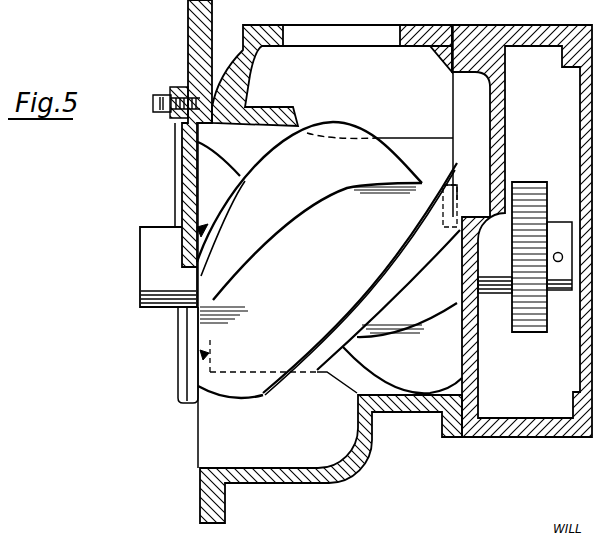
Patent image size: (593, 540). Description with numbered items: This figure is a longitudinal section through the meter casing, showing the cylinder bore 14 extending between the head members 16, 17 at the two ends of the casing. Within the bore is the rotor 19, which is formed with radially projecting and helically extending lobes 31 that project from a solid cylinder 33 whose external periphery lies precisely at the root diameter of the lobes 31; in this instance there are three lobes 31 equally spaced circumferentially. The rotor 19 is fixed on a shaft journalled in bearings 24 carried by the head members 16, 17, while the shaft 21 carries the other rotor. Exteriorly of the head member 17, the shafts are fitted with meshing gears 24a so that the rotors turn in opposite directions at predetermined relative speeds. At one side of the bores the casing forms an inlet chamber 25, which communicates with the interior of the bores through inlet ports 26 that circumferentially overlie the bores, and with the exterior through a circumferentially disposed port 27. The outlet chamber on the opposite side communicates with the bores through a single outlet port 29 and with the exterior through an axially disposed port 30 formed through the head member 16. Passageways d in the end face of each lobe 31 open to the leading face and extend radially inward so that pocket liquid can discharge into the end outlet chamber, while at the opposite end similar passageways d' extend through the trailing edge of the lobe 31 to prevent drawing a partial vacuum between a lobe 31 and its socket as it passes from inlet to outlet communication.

The cylinder bore 14 is at (263, 126).
The head member 16 is at (183, 180).
The head member 17 is at (525, 30).
The rotor 19 is at (262, 397).
The shaft 21 is at (446, 4).
The bearings 24 is at (148, 277).
The meshing gears 24a is at (527, 181).
The inlet chamber 25 is at (333, 52).
The inlet ports 26 is at (297, 128).
The circumferentially disposed port 27 is at (405, 25).
The outlet port 29 is at (350, 389).
The axially disposed port 30 is at (200, 468).
The lobes 31 is at (302, 187).
The solid cylinder 33 is at (311, 260).
The passageways d is at (257, 298).
The passageway d' is at (461, 202).